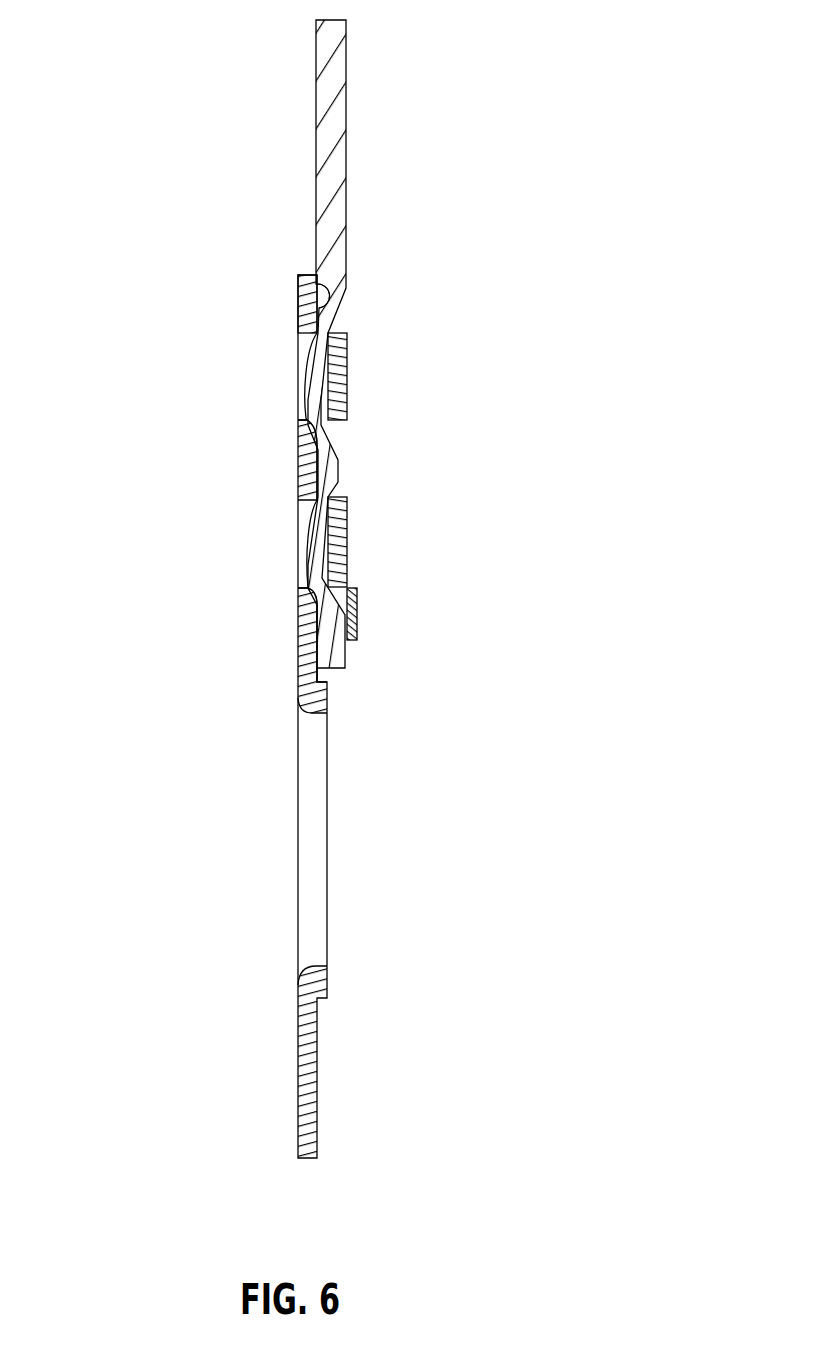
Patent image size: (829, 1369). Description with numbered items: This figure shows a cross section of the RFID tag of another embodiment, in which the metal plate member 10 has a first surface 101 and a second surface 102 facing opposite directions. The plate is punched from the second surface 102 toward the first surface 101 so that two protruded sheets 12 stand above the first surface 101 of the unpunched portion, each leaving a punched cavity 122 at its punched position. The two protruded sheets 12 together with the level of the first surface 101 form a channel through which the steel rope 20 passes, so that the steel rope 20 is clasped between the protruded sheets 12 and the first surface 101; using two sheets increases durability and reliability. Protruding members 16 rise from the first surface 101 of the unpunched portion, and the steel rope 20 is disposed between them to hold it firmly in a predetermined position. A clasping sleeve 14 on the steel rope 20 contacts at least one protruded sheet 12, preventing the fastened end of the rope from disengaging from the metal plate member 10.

The metal plate member 10 is at (284, 664).
The first surface 101 is at (318, 682).
The second surface 102 is at (298, 601).
The protruded sheet 12 is at (341, 377).
The punched cavity 122 is at (303, 347).
The clasping sleeve 14 is at (358, 605).
The protruding member 16 is at (322, 291).
The steel rope 20 is at (364, 145).